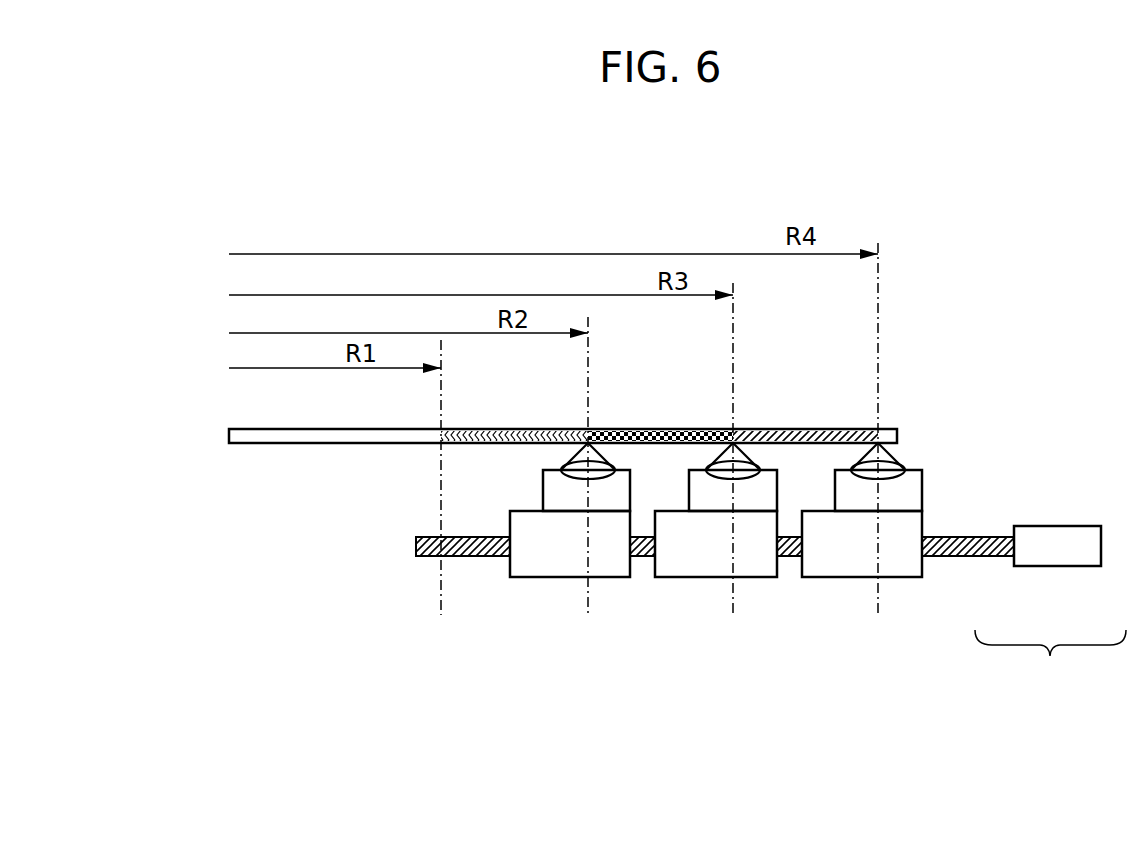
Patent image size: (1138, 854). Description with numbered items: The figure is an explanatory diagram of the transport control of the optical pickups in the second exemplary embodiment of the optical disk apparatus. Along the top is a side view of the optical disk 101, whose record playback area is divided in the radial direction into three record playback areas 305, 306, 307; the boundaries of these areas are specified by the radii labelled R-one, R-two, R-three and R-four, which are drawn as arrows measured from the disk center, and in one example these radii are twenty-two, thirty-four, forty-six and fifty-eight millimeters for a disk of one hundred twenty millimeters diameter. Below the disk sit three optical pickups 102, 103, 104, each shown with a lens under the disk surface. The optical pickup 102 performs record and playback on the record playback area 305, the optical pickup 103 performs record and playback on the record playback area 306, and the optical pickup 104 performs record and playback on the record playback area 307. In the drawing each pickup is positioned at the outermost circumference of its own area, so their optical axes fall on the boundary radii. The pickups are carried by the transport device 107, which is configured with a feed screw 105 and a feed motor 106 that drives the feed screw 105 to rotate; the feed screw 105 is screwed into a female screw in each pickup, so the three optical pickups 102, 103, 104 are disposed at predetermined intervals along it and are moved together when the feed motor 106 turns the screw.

The optical disk 101 is at (905, 440).
The optical pickup 102 is at (524, 523).
The optical pickup 103 is at (683, 557).
The optical pickup 104 is at (900, 523).
The feed screw 105 is at (978, 558).
The feed motor 106 is at (1033, 543).
The transport device 107 is at (1050, 663).
The record playback area 305 is at (552, 428).
The record playback area 306 is at (715, 428).
The record playback area 307 is at (838, 428).